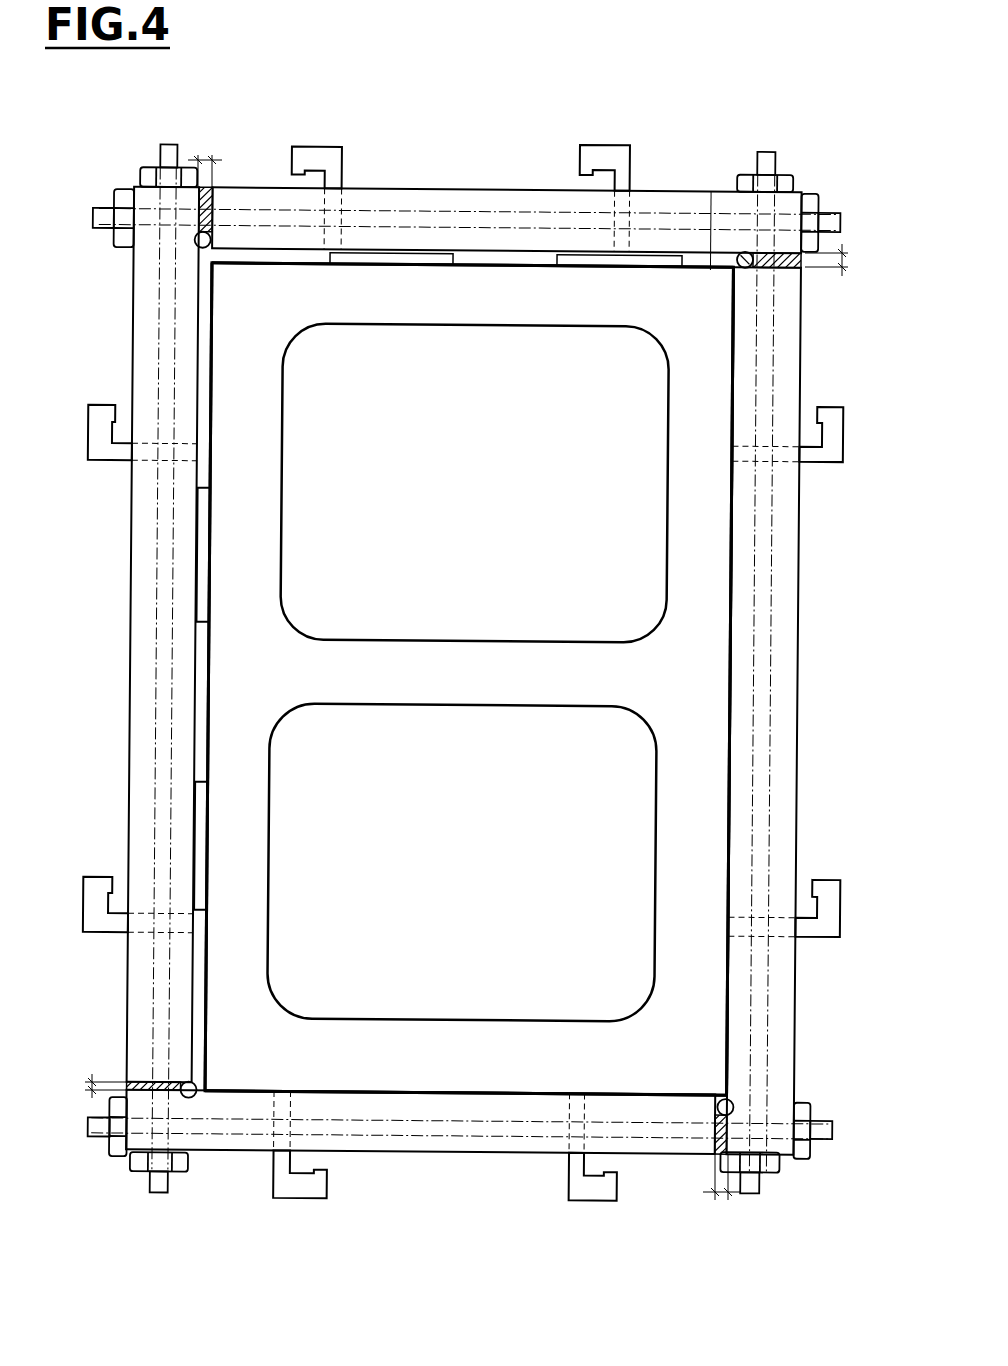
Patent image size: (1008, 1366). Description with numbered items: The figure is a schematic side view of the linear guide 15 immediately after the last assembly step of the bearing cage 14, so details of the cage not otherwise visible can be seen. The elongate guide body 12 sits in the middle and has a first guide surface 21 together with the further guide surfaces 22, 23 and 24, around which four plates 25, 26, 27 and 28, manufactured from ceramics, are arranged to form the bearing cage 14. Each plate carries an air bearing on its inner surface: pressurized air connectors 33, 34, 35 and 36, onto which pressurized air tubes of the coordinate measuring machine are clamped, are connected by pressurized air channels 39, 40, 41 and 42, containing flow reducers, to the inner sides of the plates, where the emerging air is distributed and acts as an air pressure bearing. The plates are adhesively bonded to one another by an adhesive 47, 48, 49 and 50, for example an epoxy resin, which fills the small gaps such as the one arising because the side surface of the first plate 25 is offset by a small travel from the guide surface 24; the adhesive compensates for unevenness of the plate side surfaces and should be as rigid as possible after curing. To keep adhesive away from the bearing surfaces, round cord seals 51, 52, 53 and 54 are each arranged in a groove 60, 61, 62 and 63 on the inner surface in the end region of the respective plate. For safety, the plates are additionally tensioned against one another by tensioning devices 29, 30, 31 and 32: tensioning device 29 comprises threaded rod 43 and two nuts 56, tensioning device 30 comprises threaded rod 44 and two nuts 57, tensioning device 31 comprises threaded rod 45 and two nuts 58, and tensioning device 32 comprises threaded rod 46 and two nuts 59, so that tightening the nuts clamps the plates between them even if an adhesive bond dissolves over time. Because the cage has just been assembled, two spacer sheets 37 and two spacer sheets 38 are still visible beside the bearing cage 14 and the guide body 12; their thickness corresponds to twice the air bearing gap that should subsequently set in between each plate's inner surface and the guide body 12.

The elongate guide body 12 is at (388, 313).
The bearing cage 14 is at (158, 306).
The linear guide 15 is at (490, 105).
The first guide surface 21 is at (527, 1097).
The guide surface 22 is at (205, 965).
The guide surface 23 is at (537, 262).
The guide surface 24 is at (730, 818).
The first plate 25 is at (352, 1120).
The plate 26 is at (187, 300).
The plate 27 is at (503, 237).
The plate 28 is at (726, 513).
The tensioning device 29 is at (820, 1110).
The tensioning device 30 is at (158, 1208).
The tensioning device 31 is at (90, 226).
The tensioning device 32 is at (757, 130).
The pressurized air connector 33 is at (600, 1197).
The pressurized air connector 34 is at (100, 468).
The pressurized air connector 35 is at (617, 144).
The pressurized air connector 36 is at (825, 878).
The spacer sheets 37 is at (203, 510).
The spacer sheets 38 is at (430, 257).
The pressurized air channel 39 is at (273, 1097).
The pressurized air channel 40 is at (188, 445).
The pressurized air channel 41 is at (342, 240).
The pressurized air channel 42 is at (750, 445).
The threaded rod 43 is at (430, 1130).
The threaded rod 44 is at (170, 540).
The threaded rod 45 is at (707, 270).
The threaded rod 46 is at (763, 766).
The adhesive 47 is at (714, 1130).
The adhesive 48 is at (146, 1083).
The adhesive 49 is at (205, 200).
The adhesive 50 is at (786, 268).
The seal 51 is at (712, 1100).
The seal 52 is at (230, 1058).
The seal 53 is at (210, 246).
The seal 54 is at (707, 190).
The nuts 56 is at (118, 1130).
The nuts 57 is at (168, 147).
The nuts 58 is at (110, 192).
The nuts 59 is at (740, 180).
The groove 60 is at (200, 1098).
The groove 61 is at (196, 242).
The groove 62 is at (740, 251).
The groove 63 is at (728, 1097).